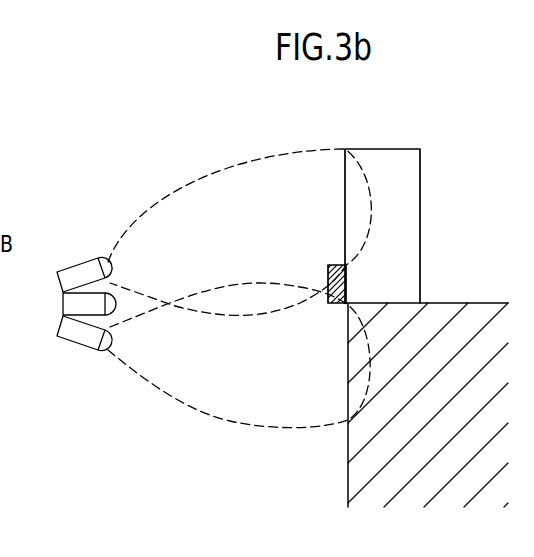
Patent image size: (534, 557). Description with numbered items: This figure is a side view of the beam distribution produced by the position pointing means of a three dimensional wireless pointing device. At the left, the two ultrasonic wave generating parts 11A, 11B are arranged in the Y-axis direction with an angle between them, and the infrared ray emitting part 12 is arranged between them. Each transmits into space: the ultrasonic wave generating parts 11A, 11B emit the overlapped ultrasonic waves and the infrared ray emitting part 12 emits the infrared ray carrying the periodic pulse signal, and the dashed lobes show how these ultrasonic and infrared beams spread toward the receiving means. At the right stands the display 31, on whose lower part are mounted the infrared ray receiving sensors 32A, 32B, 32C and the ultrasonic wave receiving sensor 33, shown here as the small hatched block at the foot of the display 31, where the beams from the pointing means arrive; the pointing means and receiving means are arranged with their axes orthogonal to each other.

The ultrasonic wave generating part 11A is at (76, 272).
The ultrasonic wave generating part 11B is at (77, 337).
The infrared ray emitting part 12 is at (73, 304).
The display 31 is at (403, 190).
The infrared ray receiving sensor 32A is at (279, 401).
The infrared ray receiving sensor 32B is at (337, 284).
The infrared ray receiving sensor 32C is at (337, 284).
The ultrasonic wave receiving sensor 33 is at (329, 305).